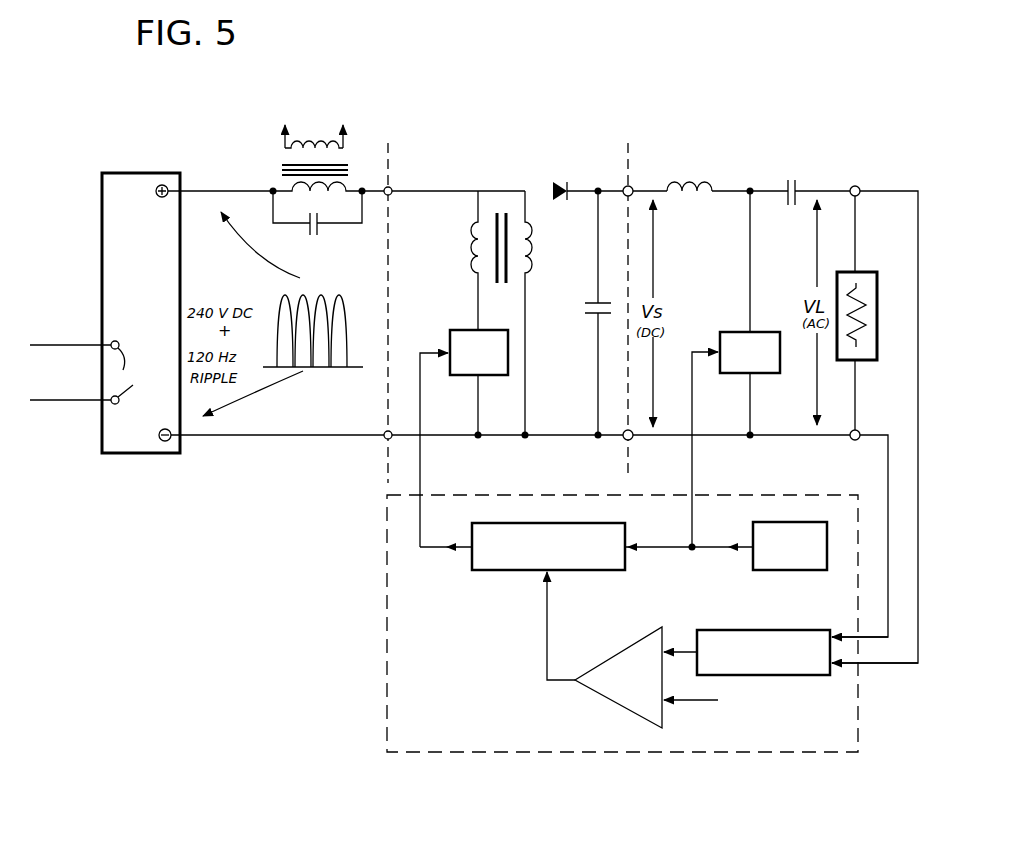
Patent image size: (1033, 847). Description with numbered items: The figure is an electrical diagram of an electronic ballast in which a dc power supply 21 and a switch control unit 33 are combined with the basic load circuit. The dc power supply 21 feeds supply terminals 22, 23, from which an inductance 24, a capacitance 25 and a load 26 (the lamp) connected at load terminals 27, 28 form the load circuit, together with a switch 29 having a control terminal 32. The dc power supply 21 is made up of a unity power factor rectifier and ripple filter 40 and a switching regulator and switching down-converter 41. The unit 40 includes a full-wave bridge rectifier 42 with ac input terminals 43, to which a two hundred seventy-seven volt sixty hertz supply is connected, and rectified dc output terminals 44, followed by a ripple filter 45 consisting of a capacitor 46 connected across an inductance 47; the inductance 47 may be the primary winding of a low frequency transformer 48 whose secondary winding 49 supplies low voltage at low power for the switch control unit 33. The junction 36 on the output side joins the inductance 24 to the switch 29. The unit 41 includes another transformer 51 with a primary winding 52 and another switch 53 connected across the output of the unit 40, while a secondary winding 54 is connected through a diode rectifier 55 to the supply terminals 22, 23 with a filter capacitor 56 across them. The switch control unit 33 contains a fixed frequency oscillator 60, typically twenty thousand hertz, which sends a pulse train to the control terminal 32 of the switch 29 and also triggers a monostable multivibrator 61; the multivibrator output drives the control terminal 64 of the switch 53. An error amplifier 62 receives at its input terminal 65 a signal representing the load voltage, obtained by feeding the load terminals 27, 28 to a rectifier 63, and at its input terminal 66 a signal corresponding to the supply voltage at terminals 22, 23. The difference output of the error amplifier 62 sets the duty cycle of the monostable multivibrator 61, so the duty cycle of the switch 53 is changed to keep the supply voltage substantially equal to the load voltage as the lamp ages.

The dc power supply 21 is at (577, 90).
The supply terminal 22 is at (633, 186).
The supply terminal 23 is at (630, 441).
The inductance 24 is at (706, 187).
The capacitance 25 is at (797, 183).
The load 26 is at (878, 278).
The load terminal 27 is at (857, 186).
The load terminal 28 is at (863, 431).
The switch 29 is at (743, 332).
The control terminal 32 is at (693, 400).
The switch control unit 33 is at (387, 570).
The junction 36 is at (748, 197).
The unity power factor rectifier and ripple filter 40 is at (367, 138).
The switching regulator and switching down-converter 41 is at (623, 137).
The full-wave bridge rectifier 42 is at (102, 192).
The ac input terminals 43 is at (92, 372).
The rectified dc output terminals 44 is at (164, 185).
The ripple filter 45 is at (370, 203).
The capacitor 46 is at (308, 230).
The inductance 47 is at (300, 195).
The transformer 48 is at (265, 158).
The secondary winding 49 is at (345, 147).
The transformer 51 is at (503, 190).
The primary winding 52 is at (469, 236).
The switch 53 is at (493, 377).
The secondary winding 54 is at (537, 252).
The diode rectifier 55 is at (562, 182).
The filter capacitor 56 is at (587, 303).
The oscillator 60 is at (797, 571).
The monostable multivibrator 61 is at (483, 572).
The error amplifier 62 is at (617, 654).
The rectifier 63 is at (760, 630).
The control terminal 64 is at (441, 350).
The input terminal 65 is at (685, 650).
The input terminal 66 is at (697, 702).